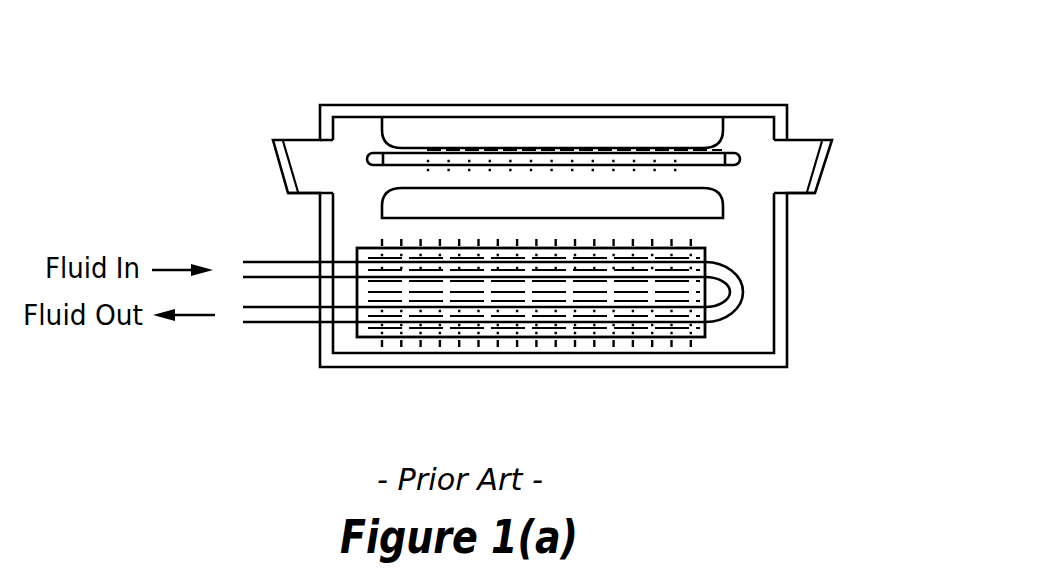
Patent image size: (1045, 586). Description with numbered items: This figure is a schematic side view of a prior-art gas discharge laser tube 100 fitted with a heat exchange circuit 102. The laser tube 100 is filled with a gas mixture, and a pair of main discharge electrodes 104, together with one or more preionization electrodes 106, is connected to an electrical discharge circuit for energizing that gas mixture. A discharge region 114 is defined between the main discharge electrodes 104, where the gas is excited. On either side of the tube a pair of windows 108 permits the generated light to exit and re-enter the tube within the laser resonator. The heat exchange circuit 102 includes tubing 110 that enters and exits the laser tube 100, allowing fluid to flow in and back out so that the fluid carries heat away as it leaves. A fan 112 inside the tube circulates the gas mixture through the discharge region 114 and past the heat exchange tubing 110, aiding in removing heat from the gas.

The gas discharge laser tube 100 is at (792, 60).
The heat exchange circuit 102 is at (743, 282).
The main discharge electrodes 104 is at (595, 207).
The preionization electrodes 106 is at (688, 151).
The windows 108 is at (282, 175).
The tubing 110 is at (280, 323).
The fan 112 is at (680, 323).
The discharge region 114 is at (446, 150).